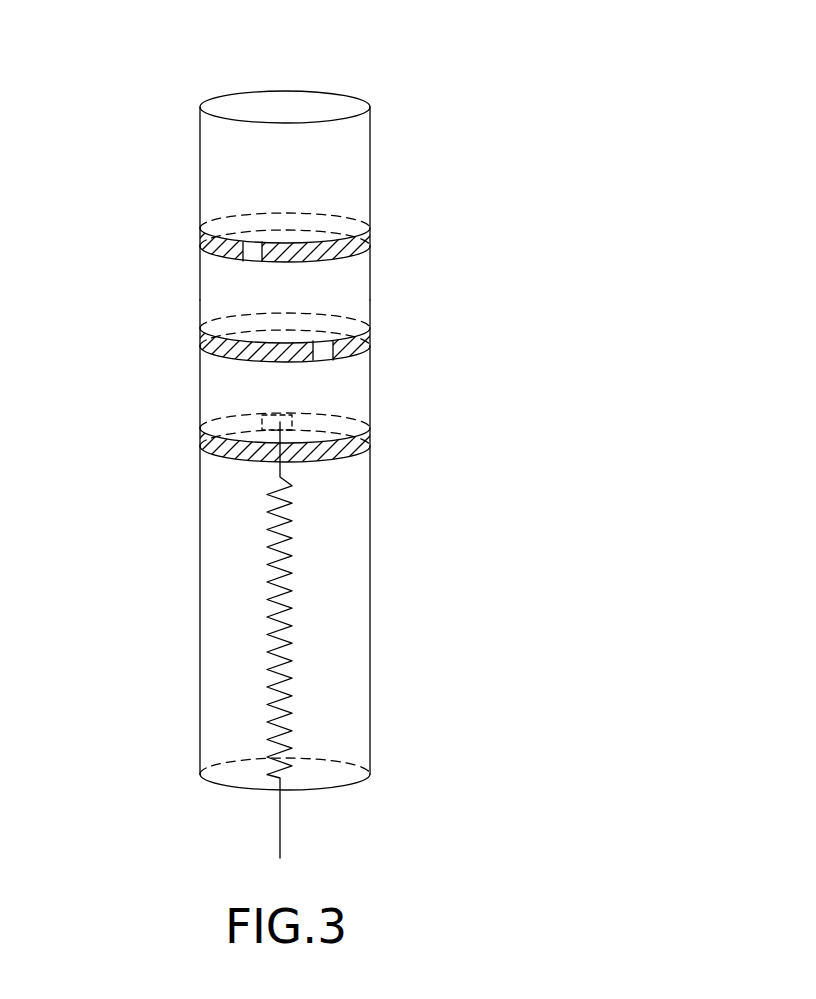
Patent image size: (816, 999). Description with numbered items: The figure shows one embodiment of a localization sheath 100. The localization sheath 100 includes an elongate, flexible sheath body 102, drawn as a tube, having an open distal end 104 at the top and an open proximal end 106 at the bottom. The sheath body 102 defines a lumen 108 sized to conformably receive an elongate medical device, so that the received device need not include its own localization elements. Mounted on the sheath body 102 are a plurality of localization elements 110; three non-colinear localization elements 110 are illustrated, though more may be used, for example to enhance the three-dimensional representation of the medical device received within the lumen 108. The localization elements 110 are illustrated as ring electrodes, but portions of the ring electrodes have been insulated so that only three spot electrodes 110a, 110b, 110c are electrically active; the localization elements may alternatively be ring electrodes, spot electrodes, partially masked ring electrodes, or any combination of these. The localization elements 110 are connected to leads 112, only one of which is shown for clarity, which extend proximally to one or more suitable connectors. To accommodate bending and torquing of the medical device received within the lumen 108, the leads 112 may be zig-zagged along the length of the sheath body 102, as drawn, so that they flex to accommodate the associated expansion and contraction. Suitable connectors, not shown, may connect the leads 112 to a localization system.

The localization sheath 100 is at (416, 58).
The sheath body 102 is at (353, 553).
The open distal end 104 is at (221, 77).
The open proximal end 106 is at (331, 810).
The lumen 108 is at (285, 88).
The localization elements 110 is at (172, 237).
The spot electrode 110a is at (253, 257).
The spot electrode 110b is at (323, 358).
The spot electrode 110c is at (273, 414).
The leads 112 is at (267, 687).